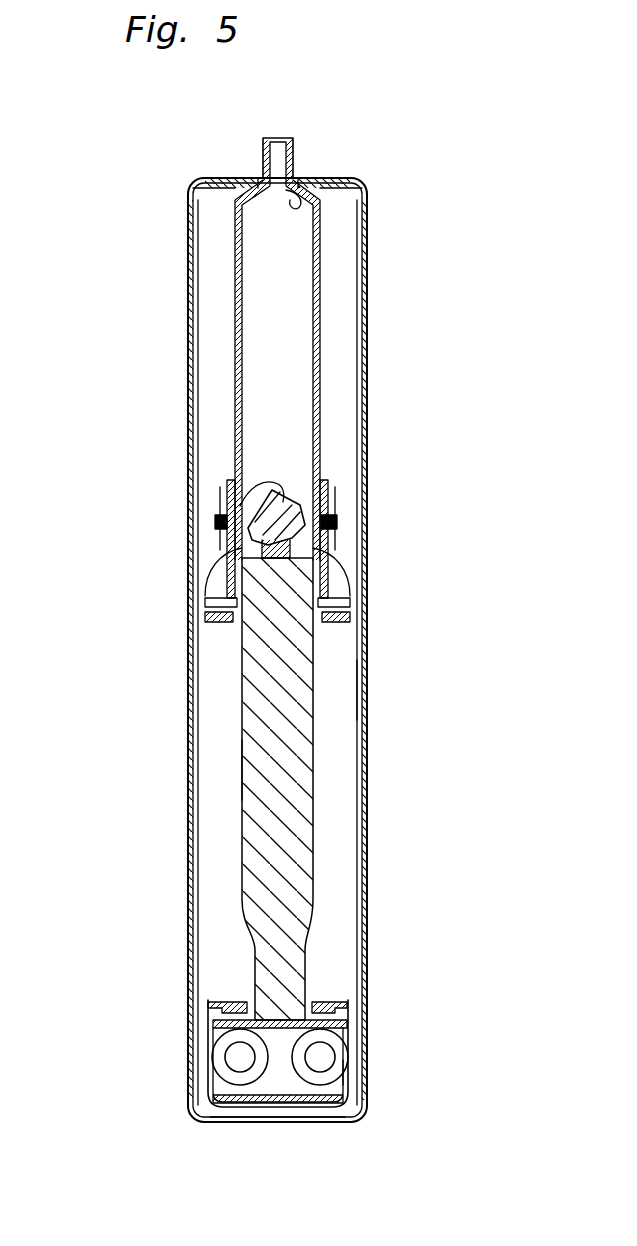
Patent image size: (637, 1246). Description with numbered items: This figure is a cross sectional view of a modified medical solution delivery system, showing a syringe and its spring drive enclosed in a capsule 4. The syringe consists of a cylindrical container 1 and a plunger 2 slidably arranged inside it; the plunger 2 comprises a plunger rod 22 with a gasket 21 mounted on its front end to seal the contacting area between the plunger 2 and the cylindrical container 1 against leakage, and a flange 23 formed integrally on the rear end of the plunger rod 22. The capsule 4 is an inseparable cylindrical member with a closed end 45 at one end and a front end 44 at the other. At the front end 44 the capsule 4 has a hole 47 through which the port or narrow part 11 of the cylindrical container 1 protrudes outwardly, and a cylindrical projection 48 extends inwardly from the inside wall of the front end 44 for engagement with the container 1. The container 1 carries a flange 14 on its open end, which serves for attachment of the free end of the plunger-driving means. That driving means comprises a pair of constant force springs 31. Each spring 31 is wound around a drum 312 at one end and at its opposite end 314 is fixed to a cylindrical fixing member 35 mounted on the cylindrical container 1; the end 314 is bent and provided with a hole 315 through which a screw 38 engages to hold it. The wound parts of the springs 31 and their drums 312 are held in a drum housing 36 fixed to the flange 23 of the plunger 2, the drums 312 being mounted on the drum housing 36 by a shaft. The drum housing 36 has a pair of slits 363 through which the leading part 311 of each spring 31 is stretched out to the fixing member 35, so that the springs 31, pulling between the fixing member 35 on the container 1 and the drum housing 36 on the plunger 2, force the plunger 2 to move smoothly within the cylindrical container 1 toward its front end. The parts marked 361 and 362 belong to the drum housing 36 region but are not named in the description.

The cylindrical container 1 is at (235, 345).
The plunger 2 is at (330, 784).
The capsule 4 is at (367, 337).
The narrow part 11 is at (295, 150).
The flange 14 is at (343, 587).
The gasket 21 is at (266, 492).
The plunger rod 22 is at (243, 767).
The flange 23 is at (243, 1017).
The constant force spring 31 is at (378, 899).
The cylindrical fixing member 35 is at (227, 577).
The drum housing 36 is at (305, 1122).
The screw 38 is at (337, 521).
The front end 44 is at (220, 178).
The closed end 45 is at (252, 1122).
The hole 47 is at (302, 196).
The cylindrical projection 48 is at (340, 620).
The leading part 311 is at (360, 699).
The drum 312 is at (243, 1067).
The opposite end 314 is at (330, 493).
The hole 315 is at (222, 530).
The bracket 361 is at (343, 1010).
The container bottom plate 362 is at (273, 1108).
The slits 363 is at (347, 1073).